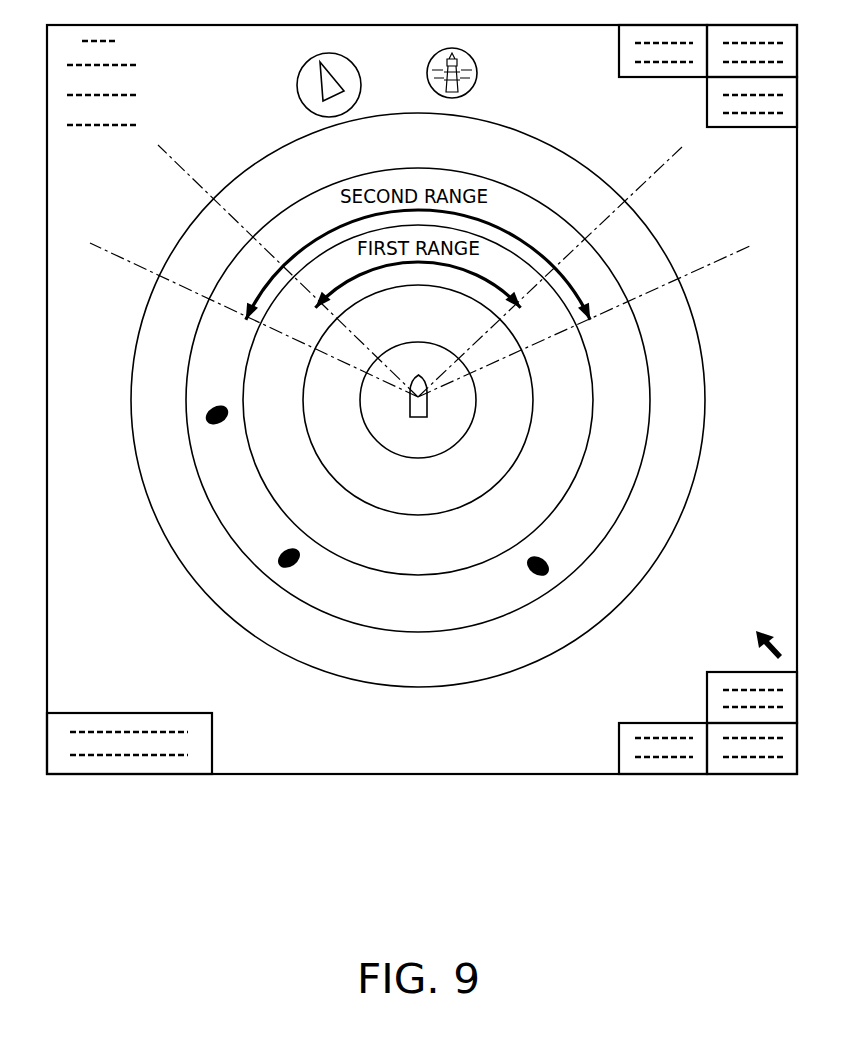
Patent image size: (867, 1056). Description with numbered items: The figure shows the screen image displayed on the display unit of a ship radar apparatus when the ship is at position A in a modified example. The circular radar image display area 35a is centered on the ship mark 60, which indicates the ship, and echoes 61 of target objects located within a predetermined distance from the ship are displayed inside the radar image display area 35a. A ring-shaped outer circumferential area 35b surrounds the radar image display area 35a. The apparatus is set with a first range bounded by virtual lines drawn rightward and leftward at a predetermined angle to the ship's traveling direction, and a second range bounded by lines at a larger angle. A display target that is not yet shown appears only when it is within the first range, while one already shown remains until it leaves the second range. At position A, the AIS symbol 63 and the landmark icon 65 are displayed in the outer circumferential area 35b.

The radar image display area 35a is at (429, 688).
The outer circumferential area 35b is at (489, 753).
The ship mark 60 is at (408, 400).
The echoes 61 is at (220, 405).
The AIS symbol 63 is at (298, 102).
The landmark icon 65 is at (478, 75).